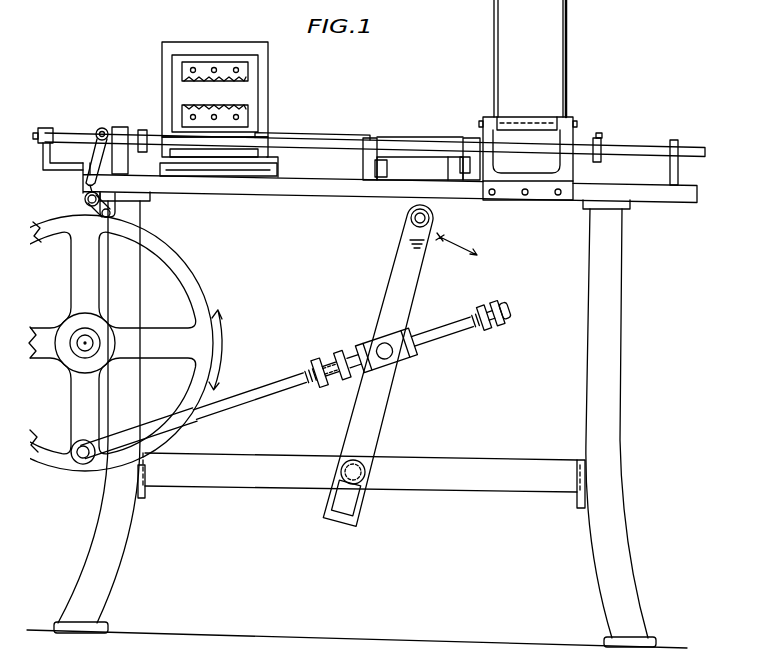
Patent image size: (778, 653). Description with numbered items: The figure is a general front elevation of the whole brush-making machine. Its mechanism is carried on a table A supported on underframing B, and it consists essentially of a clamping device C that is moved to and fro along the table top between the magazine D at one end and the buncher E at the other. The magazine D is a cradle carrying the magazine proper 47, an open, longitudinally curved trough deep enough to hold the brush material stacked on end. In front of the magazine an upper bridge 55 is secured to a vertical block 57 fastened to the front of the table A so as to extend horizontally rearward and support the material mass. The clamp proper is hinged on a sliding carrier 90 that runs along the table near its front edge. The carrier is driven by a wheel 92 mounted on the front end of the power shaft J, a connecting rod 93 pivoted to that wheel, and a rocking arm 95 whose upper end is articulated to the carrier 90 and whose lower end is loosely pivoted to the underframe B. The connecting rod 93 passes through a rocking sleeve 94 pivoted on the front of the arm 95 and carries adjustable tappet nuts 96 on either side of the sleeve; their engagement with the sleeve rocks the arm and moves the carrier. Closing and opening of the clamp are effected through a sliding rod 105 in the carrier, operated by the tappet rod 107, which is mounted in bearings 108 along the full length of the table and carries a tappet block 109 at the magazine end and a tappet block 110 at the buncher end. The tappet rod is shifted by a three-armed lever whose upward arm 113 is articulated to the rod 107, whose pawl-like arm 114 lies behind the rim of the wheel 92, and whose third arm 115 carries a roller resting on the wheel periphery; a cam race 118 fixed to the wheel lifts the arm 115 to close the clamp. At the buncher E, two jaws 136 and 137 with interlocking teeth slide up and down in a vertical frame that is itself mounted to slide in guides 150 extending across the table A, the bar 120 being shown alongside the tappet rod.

The table A is at (664, 214).
The underframing B is at (588, 361).
The clamping device C is at (421, 142).
The magazine D is at (528, 127).
The buncher E is at (215, 86).
The power shaft J is at (83, 352).
The magazine proper 47 is at (567, 60).
The upper bridge 55 is at (543, 117).
The vertical block 57 is at (549, 198).
The sliding carrier 90 is at (420, 167).
The wheel 92 is at (180, 307).
The connecting rod 93 is at (270, 388).
The rocking sleeve 94 is at (397, 352).
The rocking arm 95 is at (403, 303).
The tappet nuts 96 is at (492, 332).
The sliding rod 105 is at (448, 180).
The tappet rod 107 is at (638, 148).
The bearings 108 is at (676, 140).
The tappet block 109 is at (601, 128).
The tappet block 110 is at (143, 131).
The arm 113 is at (100, 128).
The arm 114 is at (86, 207).
The arm 115 is at (112, 205).
The cam race 118 is at (176, 441).
The bar 120 is at (321, 135).
The jaw 136 is at (244, 77).
The jaw 137 is at (240, 116).
The guides 150 is at (279, 168).